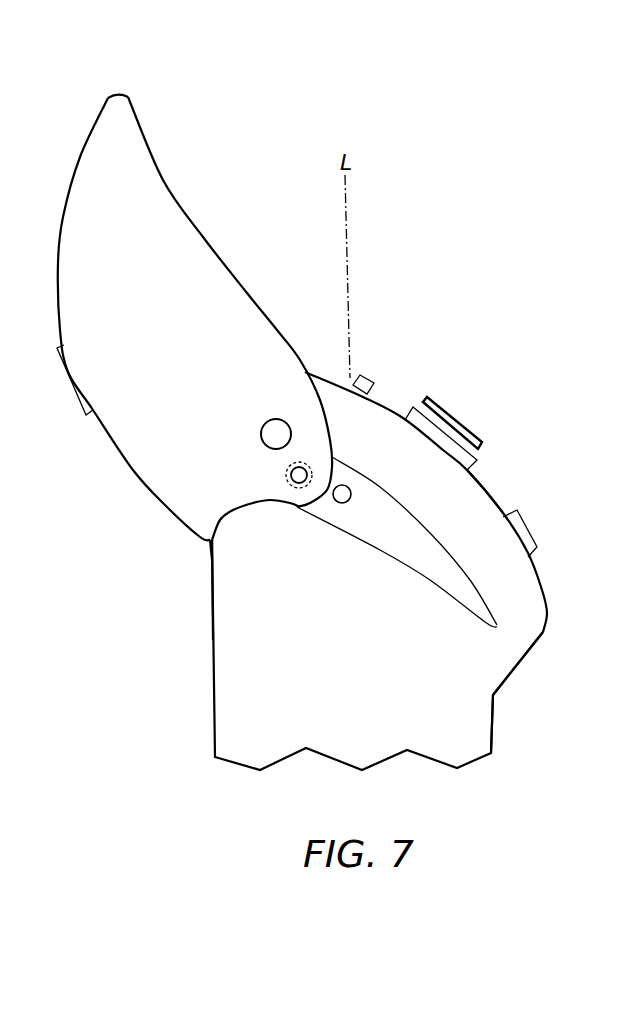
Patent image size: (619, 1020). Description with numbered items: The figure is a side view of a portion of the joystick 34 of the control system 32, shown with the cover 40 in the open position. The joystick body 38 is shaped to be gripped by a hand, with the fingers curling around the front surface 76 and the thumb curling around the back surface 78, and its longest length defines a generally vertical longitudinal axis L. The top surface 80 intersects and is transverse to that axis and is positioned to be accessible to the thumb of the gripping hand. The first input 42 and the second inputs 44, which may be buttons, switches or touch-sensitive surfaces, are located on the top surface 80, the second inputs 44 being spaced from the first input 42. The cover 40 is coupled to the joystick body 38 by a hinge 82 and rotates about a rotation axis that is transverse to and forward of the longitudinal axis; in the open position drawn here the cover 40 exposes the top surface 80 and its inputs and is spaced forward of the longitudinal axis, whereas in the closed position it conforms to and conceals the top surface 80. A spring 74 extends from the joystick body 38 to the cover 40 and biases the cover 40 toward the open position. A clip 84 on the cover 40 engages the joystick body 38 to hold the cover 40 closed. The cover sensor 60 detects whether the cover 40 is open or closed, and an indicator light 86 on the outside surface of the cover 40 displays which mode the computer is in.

The control system 32 is at (456, 234).
The joystick 34 is at (207, 560).
The joystick body 38 is at (212, 657).
The cover 40 is at (165, 183).
The first input 42 is at (450, 417).
The second inputs 44 is at (370, 378).
The cover sensor 60 is at (261, 437).
The spring 74 is at (307, 463).
The front surface 76 is at (212, 607).
The back surface 78 is at (492, 732).
The top surface 80 is at (484, 494).
The hinge 82 is at (297, 485).
The clip 84 is at (118, 95).
The indicator light 86 is at (68, 378).